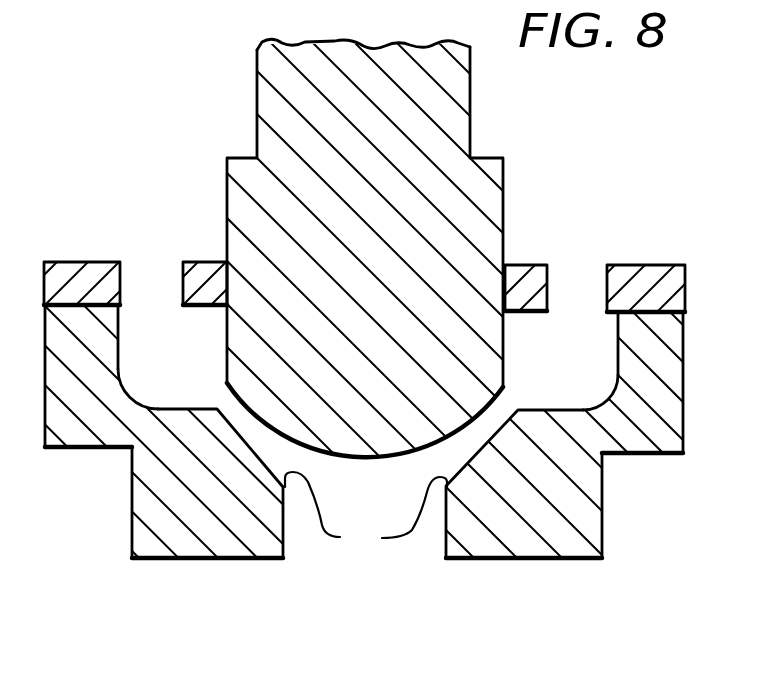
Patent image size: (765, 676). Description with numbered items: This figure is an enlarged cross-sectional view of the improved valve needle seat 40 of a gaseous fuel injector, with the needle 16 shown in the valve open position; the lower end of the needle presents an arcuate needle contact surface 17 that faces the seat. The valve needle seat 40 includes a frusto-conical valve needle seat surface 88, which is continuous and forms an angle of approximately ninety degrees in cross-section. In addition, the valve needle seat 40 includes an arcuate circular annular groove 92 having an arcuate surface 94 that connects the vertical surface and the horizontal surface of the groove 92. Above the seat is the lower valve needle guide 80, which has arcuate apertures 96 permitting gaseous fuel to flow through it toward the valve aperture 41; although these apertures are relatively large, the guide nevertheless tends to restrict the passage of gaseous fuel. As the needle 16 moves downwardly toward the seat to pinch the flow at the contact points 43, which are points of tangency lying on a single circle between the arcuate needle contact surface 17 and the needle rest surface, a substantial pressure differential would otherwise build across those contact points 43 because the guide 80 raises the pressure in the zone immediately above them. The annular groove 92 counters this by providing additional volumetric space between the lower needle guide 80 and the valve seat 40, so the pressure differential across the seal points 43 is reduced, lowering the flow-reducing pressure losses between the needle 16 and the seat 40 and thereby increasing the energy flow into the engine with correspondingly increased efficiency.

The needle 16 is at (382, 338).
The spherical seating surface of plug 17 is at (435, 262).
The valve needle seat 40 is at (326, 338).
The lower valve needle guide 80 is at (652, 277).
The arcuate circular annular groove 92 is at (117, 330).
The arcuate apertures 96 is at (160, 272).
The arcuate surface 94 is at (142, 397).
The frusto-conical valve needle seat surface 88 is at (366, 513).
The contact points 43 is at (460, 452).
The valve aperture 41 is at (327, 568).